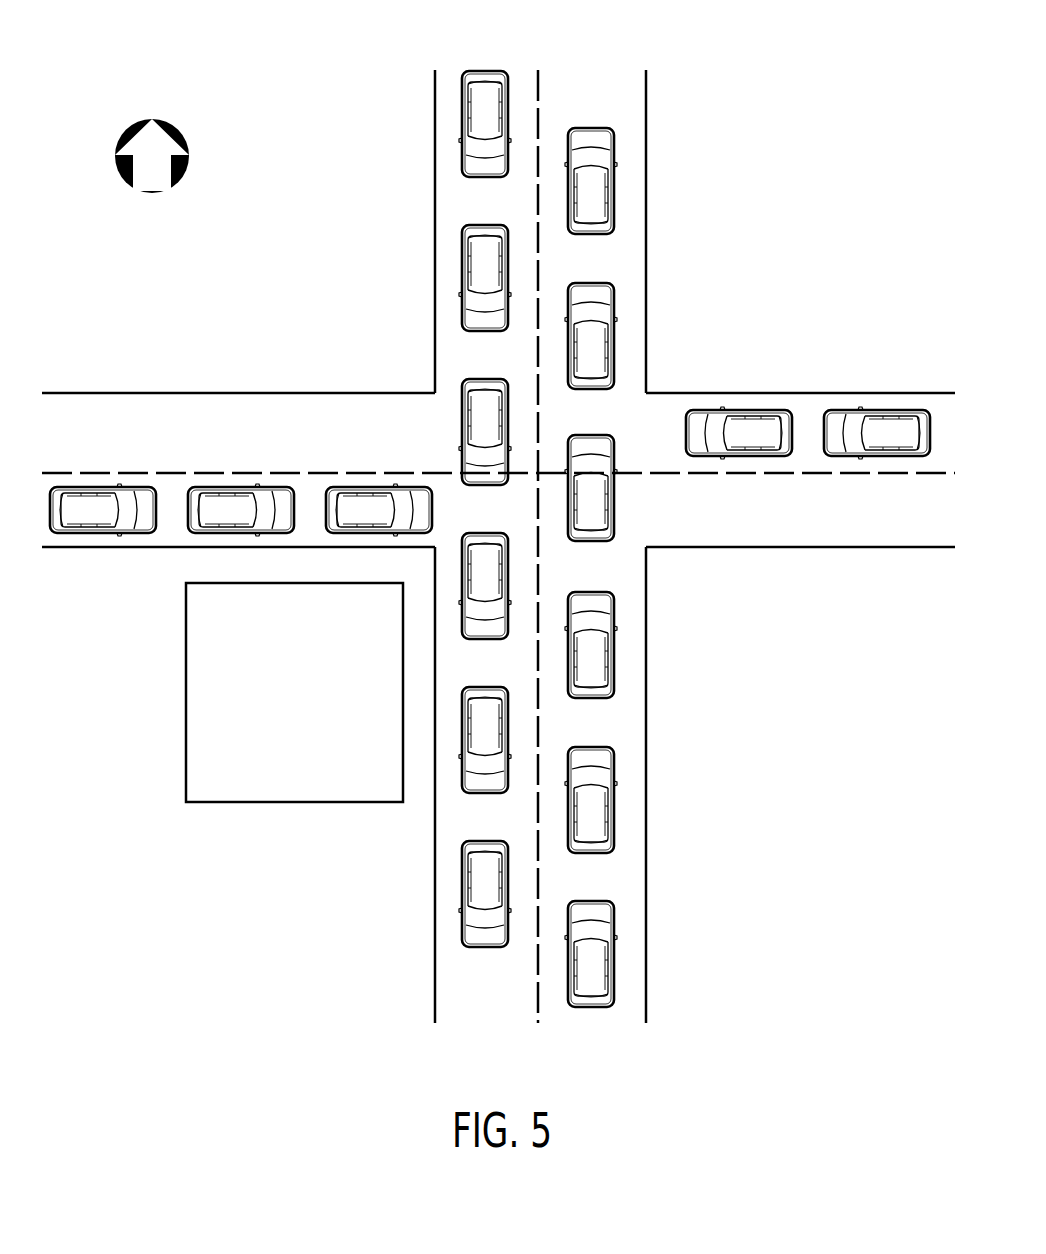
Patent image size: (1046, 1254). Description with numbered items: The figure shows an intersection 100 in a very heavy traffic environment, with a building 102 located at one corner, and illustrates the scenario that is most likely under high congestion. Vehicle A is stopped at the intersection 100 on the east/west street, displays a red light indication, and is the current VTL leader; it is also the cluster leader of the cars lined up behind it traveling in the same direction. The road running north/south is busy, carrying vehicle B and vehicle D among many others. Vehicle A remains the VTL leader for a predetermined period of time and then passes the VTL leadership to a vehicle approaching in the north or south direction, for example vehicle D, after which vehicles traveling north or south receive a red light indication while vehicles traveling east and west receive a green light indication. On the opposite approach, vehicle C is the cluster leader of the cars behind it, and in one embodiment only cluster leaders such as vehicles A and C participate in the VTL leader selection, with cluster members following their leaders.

The intersection 100 is at (858, 135).
The building 102 is at (294, 692).
The vehicle A is at (362, 486).
The vehicle B is at (617, 502).
The vehicle C is at (753, 410).
The vehicle D is at (616, 813).